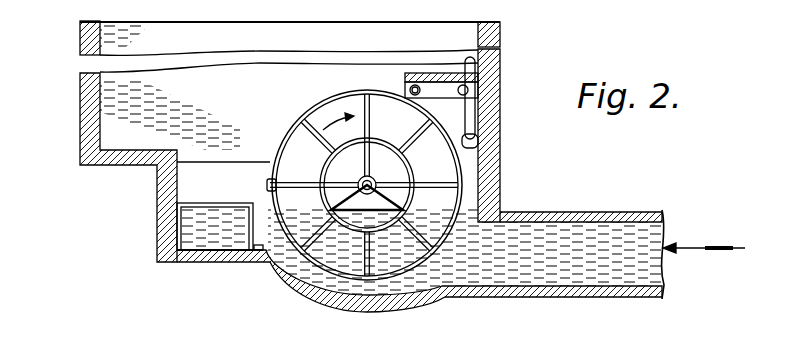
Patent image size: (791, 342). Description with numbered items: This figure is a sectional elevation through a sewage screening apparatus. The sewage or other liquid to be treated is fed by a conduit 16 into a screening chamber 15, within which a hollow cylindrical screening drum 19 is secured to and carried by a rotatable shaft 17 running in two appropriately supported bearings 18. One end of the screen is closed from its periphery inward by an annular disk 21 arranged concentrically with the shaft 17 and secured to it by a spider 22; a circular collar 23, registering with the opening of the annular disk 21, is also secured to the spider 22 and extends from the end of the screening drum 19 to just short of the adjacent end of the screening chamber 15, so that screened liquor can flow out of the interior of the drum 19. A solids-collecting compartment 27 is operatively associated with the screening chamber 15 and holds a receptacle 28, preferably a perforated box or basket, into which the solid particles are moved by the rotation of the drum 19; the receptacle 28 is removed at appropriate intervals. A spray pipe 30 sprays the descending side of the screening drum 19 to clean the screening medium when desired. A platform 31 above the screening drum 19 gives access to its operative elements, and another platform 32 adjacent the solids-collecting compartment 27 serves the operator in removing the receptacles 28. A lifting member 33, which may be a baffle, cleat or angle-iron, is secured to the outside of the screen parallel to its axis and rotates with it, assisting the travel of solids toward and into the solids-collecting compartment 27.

The screening chamber 15 is at (342, 290).
The conduit 16 is at (587, 232).
The rotatable shaft 17 is at (358, 175).
The bearings 18 is at (290, 75).
The screening drum 19 is at (318, 105).
The annular disk 21 is at (297, 145).
The spider 22 is at (372, 150).
The circular collar 23 is at (412, 174).
The solids-collecting compartment 27 is at (192, 186).
The receptacle 28 is at (208, 260).
The spray pipe 30 is at (500, 103).
The platform 31 is at (440, 72).
The platform 32 is at (112, 167).
The lifting member 33 is at (270, 184).